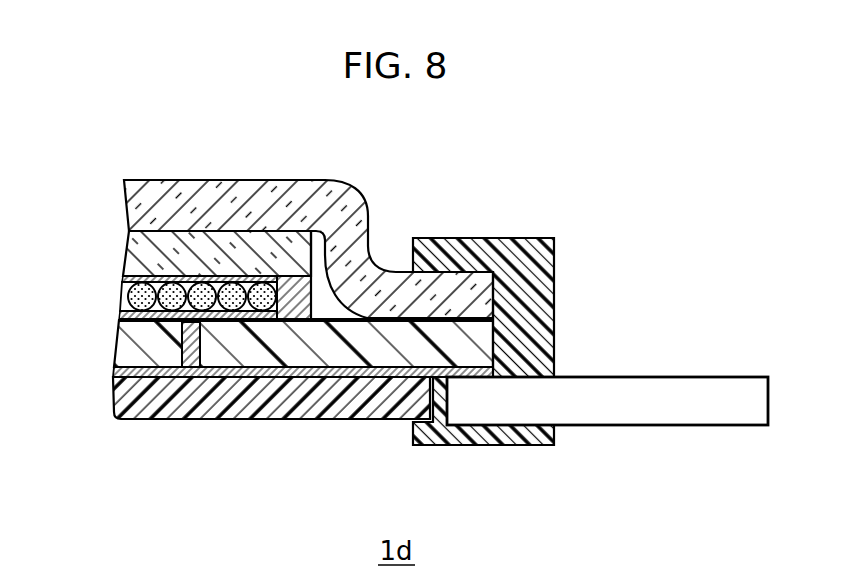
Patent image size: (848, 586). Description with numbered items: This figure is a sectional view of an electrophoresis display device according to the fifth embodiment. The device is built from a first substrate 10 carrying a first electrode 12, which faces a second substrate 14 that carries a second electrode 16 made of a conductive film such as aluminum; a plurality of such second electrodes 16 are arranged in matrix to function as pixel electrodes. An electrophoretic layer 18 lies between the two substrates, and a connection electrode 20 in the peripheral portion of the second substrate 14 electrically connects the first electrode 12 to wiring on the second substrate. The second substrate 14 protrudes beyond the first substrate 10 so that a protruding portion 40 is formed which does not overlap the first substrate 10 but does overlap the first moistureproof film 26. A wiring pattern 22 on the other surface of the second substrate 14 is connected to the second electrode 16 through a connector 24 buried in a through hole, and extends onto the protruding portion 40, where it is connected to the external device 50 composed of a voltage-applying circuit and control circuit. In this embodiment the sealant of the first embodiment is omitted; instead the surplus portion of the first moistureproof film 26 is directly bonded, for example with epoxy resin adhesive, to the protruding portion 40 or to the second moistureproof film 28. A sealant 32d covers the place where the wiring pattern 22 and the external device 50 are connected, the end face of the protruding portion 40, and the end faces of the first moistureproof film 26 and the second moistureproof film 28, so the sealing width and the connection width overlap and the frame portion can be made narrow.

The first substrate 10 is at (130, 252).
The first electrode 12 is at (124, 279).
The electrophoretic layer 18 is at (127, 297).
The second electrode 16 is at (127, 319).
The second substrate 14 is at (122, 335).
The connection electrode 20 is at (293, 290).
The first moistureproof film 26 is at (358, 218).
The connector 24 is at (178, 340).
The wiring pattern 22 is at (257, 375).
The second moistureproof film 28 is at (121, 403).
The sealant 32d is at (548, 260).
The protruding portion 40 is at (394, 362).
The external device 50 is at (724, 378).